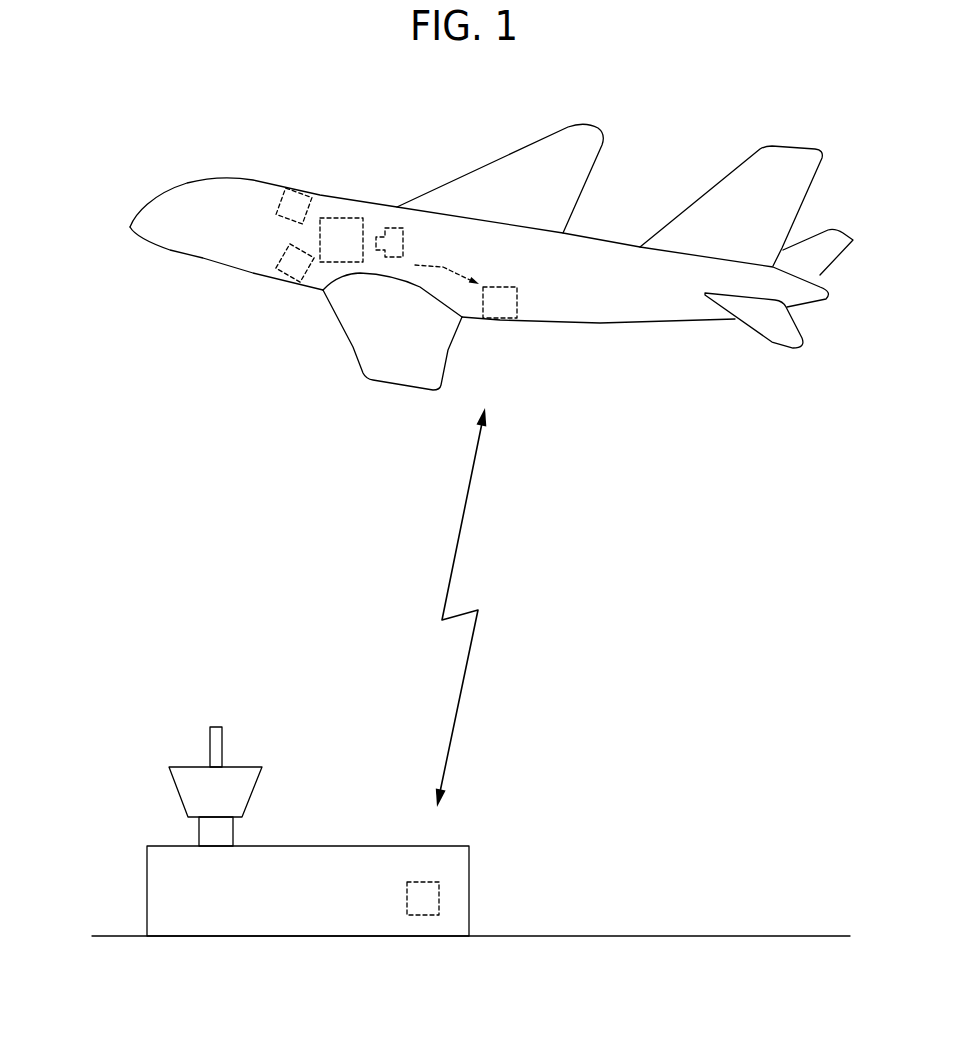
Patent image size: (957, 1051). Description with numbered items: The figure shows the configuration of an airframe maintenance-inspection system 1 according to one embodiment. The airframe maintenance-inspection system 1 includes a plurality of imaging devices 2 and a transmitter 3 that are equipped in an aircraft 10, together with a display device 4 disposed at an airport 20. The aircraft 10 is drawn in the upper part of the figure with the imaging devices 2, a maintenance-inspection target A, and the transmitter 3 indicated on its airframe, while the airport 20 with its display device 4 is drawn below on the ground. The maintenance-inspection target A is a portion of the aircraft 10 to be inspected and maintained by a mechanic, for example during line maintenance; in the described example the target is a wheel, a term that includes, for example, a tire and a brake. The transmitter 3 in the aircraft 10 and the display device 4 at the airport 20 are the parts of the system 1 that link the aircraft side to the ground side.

The airframe maintenance-inspection system 1 is at (146, 147).
The aircraft 10 is at (593, 298).
The imaging devices 2 is at (277, 188).
The maintenance-inspection target A is at (345, 237).
The transmitter 3 is at (502, 303).
The airport 20 is at (145, 857).
The display device 4 is at (435, 893).